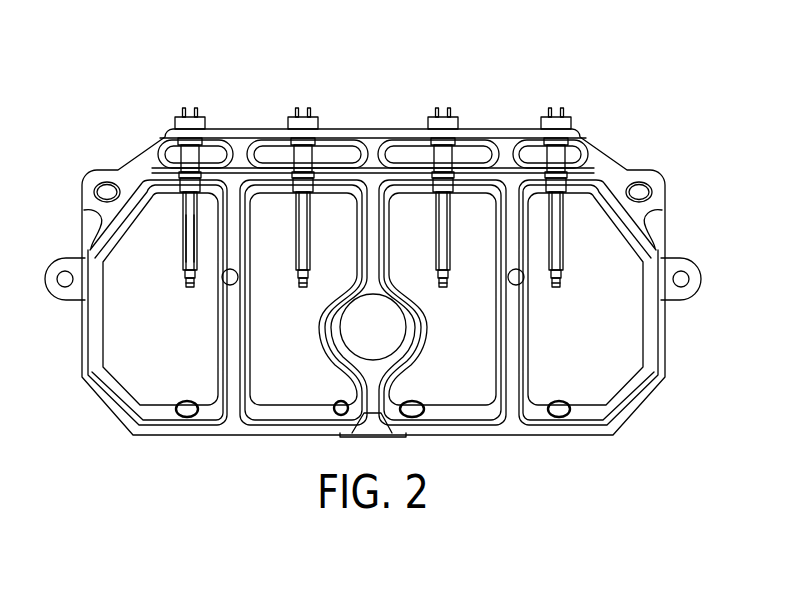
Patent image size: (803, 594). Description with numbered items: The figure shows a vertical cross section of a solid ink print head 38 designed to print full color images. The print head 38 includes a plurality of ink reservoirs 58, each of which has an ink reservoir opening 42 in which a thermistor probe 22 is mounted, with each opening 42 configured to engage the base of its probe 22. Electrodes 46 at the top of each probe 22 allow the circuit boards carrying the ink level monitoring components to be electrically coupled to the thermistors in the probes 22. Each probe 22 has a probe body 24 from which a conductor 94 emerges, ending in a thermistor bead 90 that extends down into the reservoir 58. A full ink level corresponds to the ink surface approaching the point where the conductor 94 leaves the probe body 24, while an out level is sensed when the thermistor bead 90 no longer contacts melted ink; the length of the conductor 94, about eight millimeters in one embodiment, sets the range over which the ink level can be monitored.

The thermistor probe 22 is at (352, 206).
The probe body 24 is at (194, 258).
The solid ink print head 38 is at (668, 103).
The ink reservoir opening 42 is at (192, 130).
The electrodes 46 is at (298, 100).
The ink reservoir 58 is at (140, 340).
The thermistor bead 90 is at (188, 284).
The conductor 94 is at (184, 244).